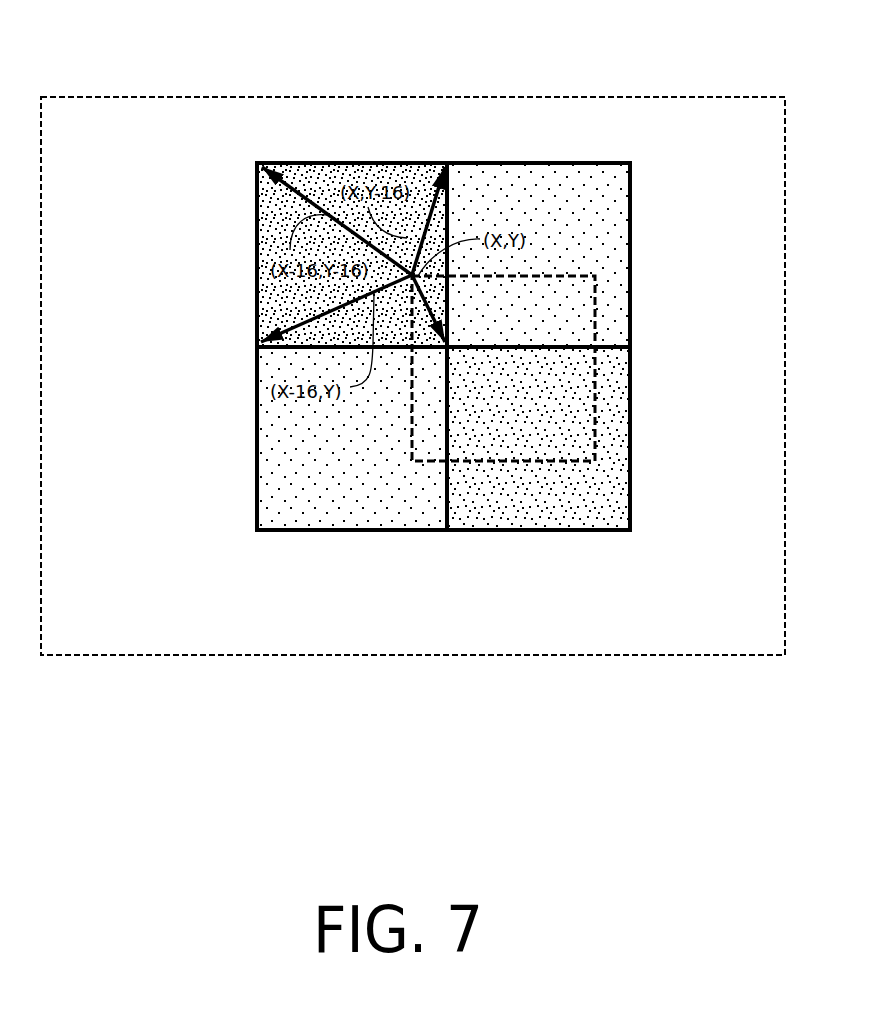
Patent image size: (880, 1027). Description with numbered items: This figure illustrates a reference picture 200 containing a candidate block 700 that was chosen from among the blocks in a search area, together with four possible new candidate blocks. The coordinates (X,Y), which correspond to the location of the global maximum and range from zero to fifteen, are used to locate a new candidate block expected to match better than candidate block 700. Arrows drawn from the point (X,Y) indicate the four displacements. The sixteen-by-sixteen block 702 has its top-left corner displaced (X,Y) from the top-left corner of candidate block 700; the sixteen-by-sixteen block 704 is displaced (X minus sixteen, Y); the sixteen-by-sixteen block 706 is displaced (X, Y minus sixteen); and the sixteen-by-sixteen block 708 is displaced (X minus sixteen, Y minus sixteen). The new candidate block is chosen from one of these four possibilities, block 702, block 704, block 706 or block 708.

The reference picture 200 is at (415, 98).
The candidate block 700 is at (597, 377).
The 16×16 block 702 is at (537, 532).
The 16×16 block 704 is at (256, 438).
The 16×16 block 706 is at (632, 253).
The 16×16 block 708 is at (256, 251).